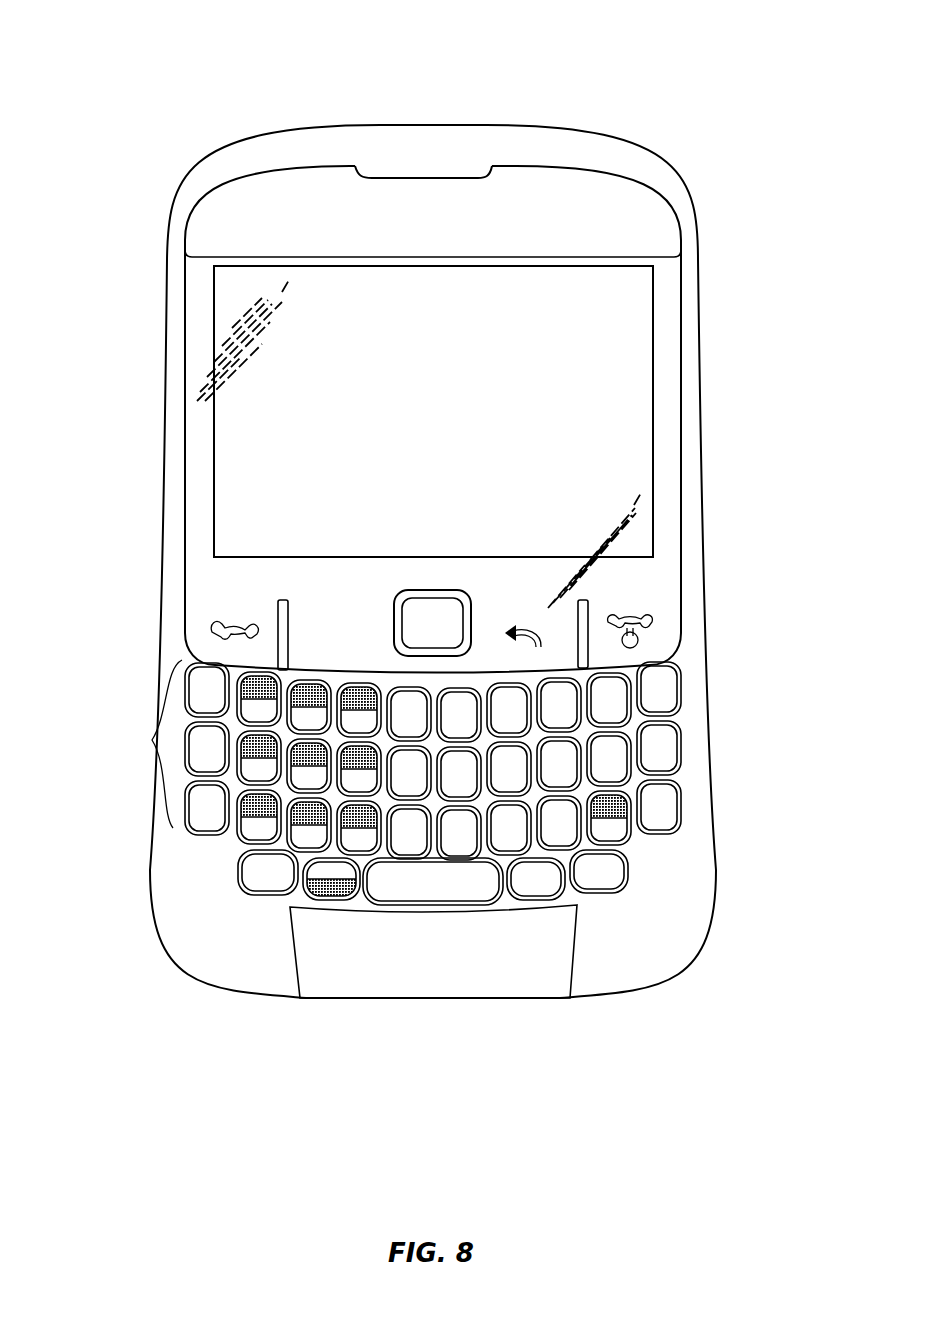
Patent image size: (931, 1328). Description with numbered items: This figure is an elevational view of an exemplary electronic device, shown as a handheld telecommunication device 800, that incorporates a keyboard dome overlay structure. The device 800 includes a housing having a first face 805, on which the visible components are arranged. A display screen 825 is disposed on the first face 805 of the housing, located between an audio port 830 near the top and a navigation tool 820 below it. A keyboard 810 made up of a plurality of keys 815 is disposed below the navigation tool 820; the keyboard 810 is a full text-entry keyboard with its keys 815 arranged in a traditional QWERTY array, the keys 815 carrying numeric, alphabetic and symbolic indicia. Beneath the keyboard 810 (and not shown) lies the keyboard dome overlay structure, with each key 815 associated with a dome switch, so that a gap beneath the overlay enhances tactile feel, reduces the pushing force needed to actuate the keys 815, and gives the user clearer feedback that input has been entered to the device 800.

The handheld telecommunication device 800 is at (246, 60).
The first face 805 is at (170, 246).
The keyboard 810 is at (152, 740).
The keys 815 is at (192, 695).
The navigation tool 820 is at (435, 617).
The display screen 825 is at (600, 432).
The audio port 830 is at (490, 178).